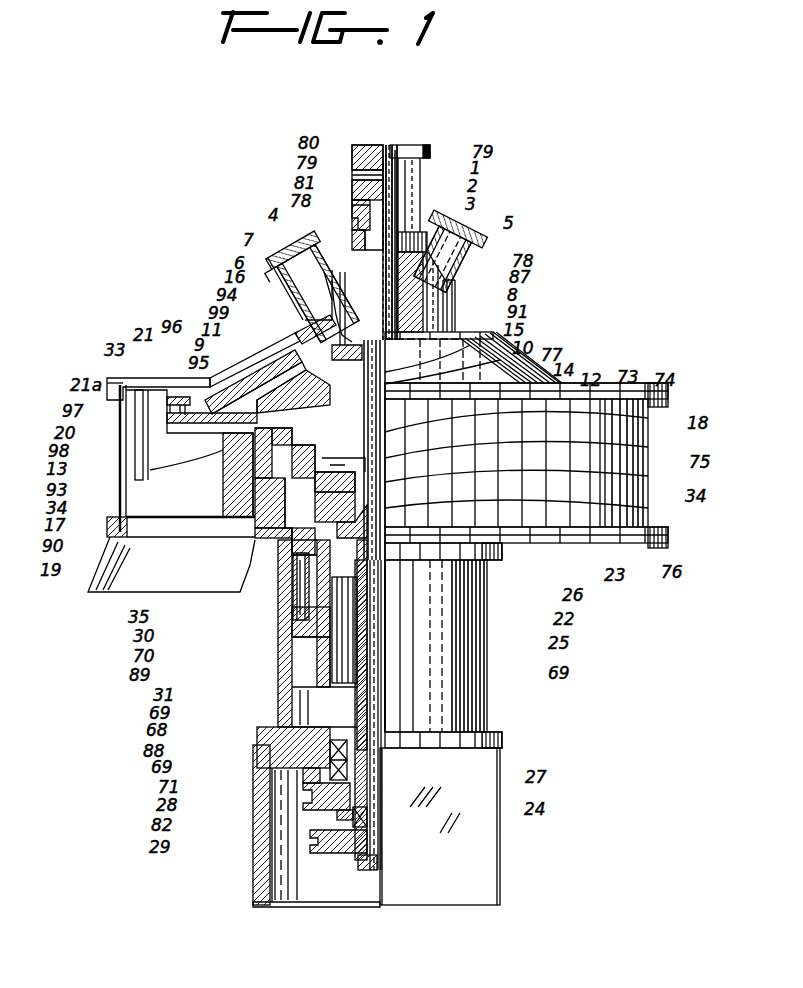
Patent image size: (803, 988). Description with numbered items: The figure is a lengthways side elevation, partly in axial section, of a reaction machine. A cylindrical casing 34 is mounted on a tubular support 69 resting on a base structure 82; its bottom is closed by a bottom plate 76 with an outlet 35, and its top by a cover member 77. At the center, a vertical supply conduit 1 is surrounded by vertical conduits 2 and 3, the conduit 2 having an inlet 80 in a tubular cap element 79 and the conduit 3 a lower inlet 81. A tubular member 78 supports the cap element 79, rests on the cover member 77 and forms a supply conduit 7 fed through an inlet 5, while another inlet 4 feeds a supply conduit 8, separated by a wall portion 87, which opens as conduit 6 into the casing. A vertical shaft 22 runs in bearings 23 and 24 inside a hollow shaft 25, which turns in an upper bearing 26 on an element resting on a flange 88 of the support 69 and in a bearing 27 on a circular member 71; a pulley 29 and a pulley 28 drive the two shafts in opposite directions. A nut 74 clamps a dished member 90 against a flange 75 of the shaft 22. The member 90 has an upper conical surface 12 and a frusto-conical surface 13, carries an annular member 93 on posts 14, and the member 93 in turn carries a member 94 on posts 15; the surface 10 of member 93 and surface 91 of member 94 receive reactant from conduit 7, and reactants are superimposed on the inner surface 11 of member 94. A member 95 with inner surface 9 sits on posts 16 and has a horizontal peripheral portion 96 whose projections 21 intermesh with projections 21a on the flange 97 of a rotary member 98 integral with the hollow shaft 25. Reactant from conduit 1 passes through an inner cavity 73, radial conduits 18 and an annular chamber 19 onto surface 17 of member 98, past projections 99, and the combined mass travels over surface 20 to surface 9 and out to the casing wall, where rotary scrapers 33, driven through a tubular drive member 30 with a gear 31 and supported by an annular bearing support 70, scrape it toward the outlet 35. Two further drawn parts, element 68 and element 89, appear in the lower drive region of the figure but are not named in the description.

The vertical supply conduit 1 is at (398, 190).
The vertical conduit 2 is at (385, 210).
The vertical conduit 3 is at (376, 230).
The inlet 4 is at (300, 241).
The inlet 5 is at (470, 234).
The supply conduit 6 is at (322, 301).
The supply conduit 7 is at (292, 271).
The supply conduit 8 is at (410, 322).
The inner frusto-conical surface 9 is at (248, 373).
The frusto-conical inner surface 10 is at (470, 356).
The frusto-conical inner surface 11 is at (258, 363).
The upper conical surface 12 is at (540, 395).
The frusto-conical surface 13 is at (230, 447).
The supporting posts 14 is at (505, 385).
The supporting posts 15 is at (430, 340).
The posts 16 is at (305, 331).
The frusto-conical surface 17 is at (120, 528).
The conduits 18 is at (600, 434).
The annular chamber 19 is at (108, 561).
The frusto-conical surface 20 is at (260, 402).
The projections 21 is at (152, 388).
The projections 21a is at (118, 401).
The vertical shaft 22 is at (470, 614).
The bearing 23 is at (570, 548).
The bearing 24 is at (367, 810).
The hollow shaft 25 is at (478, 642).
The upper bearing 26 is at (500, 582).
The bearing 27 is at (343, 753).
The pulley 28 is at (303, 801).
The pulley 29 is at (320, 843).
The tubular drive member 30 is at (255, 597).
The gear 31 is at (285, 662).
The rotary scrapers 33 is at (120, 378).
The cylindrical casing 34 is at (68, 511).
The outlet 35 is at (148, 592).
The inner cylinder 68 is at (305, 692).
The tubular support 69 is at (546, 674).
The annular bearing support 70 is at (293, 617).
The circular member 71 is at (310, 773).
The inner cavity 73 is at (590, 395).
The nut 74 is at (640, 392).
The flange 75 is at (630, 472).
The bottom plate 76 is at (655, 548).
The cover member 77 is at (500, 368).
The tubular member 78 is at (311, 204).
The tubular cap element 79 is at (470, 154).
The inlet 80 is at (352, 170).
The lower inlet 81 is at (352, 213).
The base structure 82 is at (262, 822).
The wall portion 87 is at (440, 298).
The flange 88 is at (340, 707).
The block 89 is at (300, 632).
The dished member 90 is at (230, 533).
The surface 91 is at (400, 338).
The annular member 93 is at (255, 472).
The member 94 is at (283, 346).
The member 95 is at (240, 381).
The horizontal annular peripheral portion 96 is at (172, 400).
The annular peripheral horizontal flange 97 is at (230, 391).
The rotary member 98 is at (215, 427).
The projections 99 is at (268, 356).